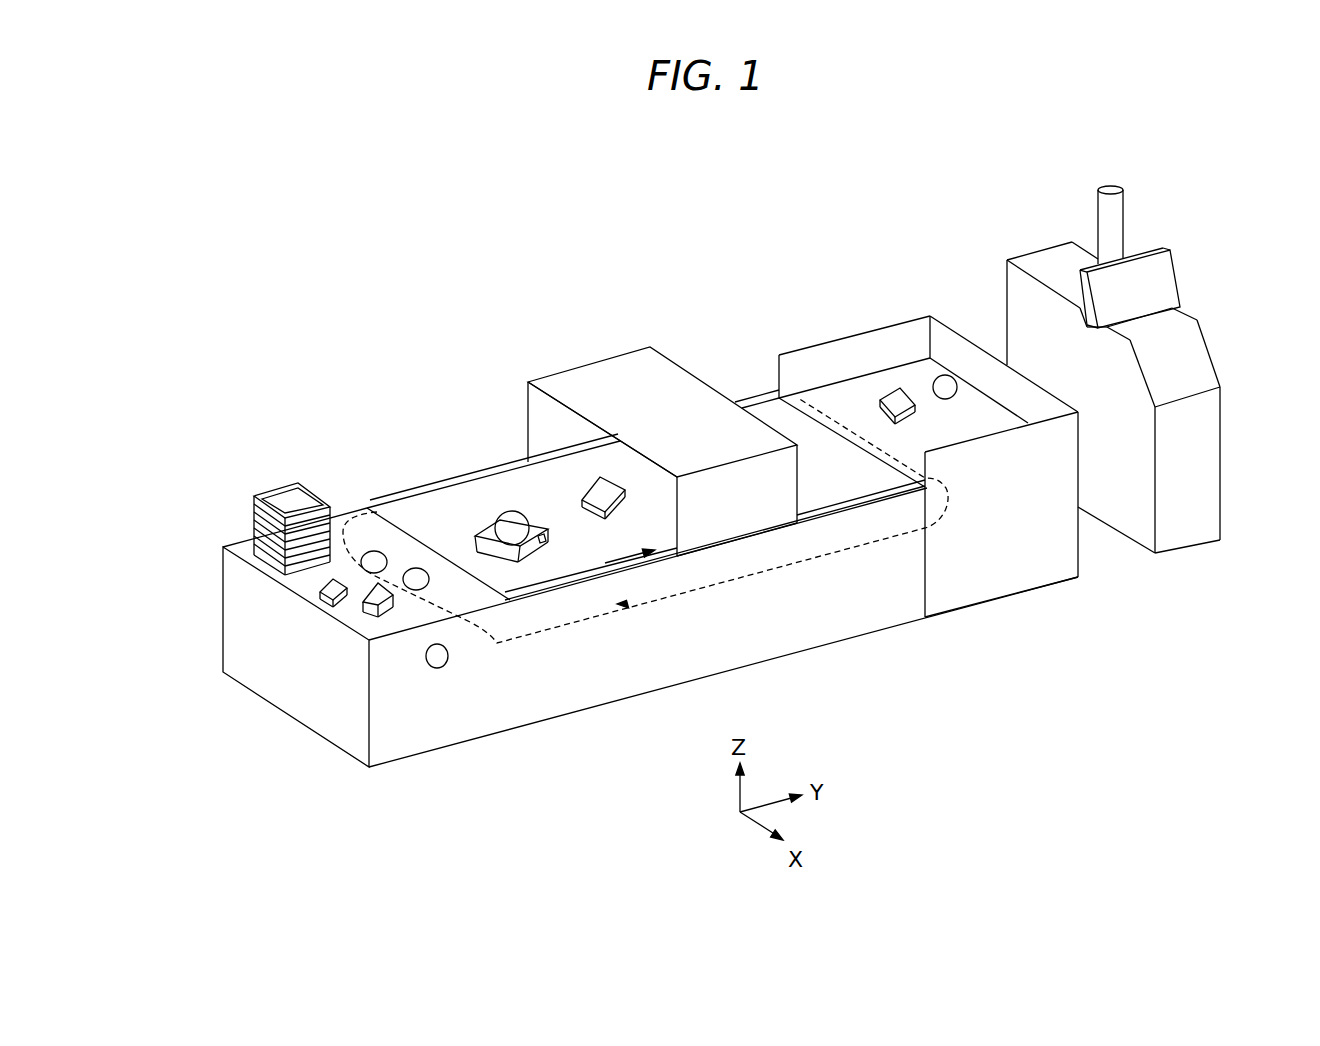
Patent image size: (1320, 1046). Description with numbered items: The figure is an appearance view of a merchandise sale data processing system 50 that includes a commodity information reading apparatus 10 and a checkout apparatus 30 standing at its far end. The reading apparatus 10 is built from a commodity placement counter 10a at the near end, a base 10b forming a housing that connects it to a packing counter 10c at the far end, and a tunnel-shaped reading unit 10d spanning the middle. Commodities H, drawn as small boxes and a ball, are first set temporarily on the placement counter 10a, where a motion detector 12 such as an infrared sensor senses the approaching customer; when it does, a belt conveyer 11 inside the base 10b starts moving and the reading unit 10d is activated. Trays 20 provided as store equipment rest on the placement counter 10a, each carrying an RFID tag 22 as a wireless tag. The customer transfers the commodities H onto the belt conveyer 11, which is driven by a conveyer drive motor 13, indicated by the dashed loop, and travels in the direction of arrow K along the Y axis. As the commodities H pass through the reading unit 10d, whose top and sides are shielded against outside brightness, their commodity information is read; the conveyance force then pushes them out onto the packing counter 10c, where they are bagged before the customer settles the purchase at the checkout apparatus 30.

The commodity information reading apparatus 10 is at (629, 544).
The commodity placement counter 10a is at (350, 618).
The base 10b is at (833, 627).
The packing counter 10c is at (883, 378).
The reading unit 10d is at (583, 378).
The belt conveyer 11 is at (525, 485).
The motion detector 12 is at (441, 666).
The conveyer drive motor 13 is at (497, 637).
The tray 20 is at (270, 498).
The RFID tag 22 is at (542, 545).
The checkout apparatus 30 is at (1064, 263).
The merchandise sale data processing system 50 is at (700, 487).
The commodity H is at (320, 583).
The arrow K is at (627, 552).